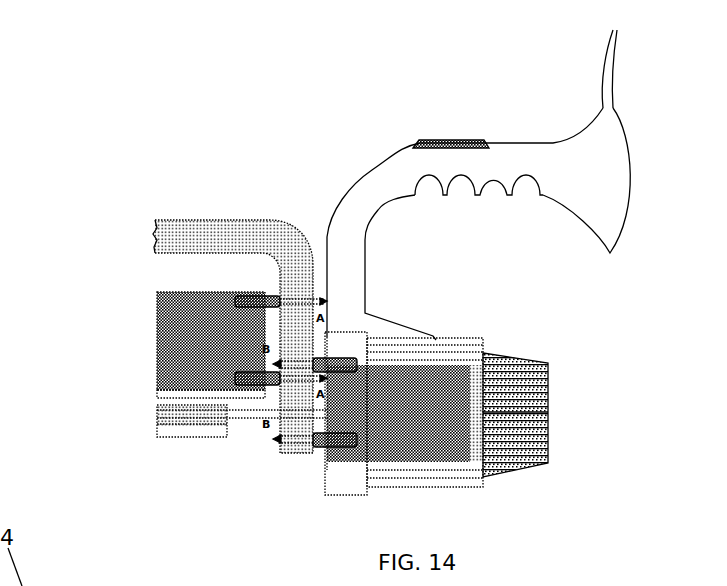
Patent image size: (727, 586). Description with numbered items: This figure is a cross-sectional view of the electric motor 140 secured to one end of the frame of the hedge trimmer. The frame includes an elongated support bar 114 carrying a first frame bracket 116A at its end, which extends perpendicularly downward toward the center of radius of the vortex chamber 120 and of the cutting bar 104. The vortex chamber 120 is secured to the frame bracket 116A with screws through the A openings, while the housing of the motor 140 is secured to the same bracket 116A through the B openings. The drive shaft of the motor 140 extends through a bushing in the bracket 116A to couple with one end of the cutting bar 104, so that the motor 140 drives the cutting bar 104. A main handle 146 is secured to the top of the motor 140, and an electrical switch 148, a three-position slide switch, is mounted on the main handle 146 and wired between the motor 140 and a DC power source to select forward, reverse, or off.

The cutting bar 104 is at (157, 417).
The elongated support bar 114 is at (178, 228).
The first frame bracket 116A is at (287, 262).
The vortex chamber 120 is at (157, 355).
The electric motor 140 is at (542, 425).
The main handle 146 is at (375, 172).
The electrical switch 148 is at (430, 140).